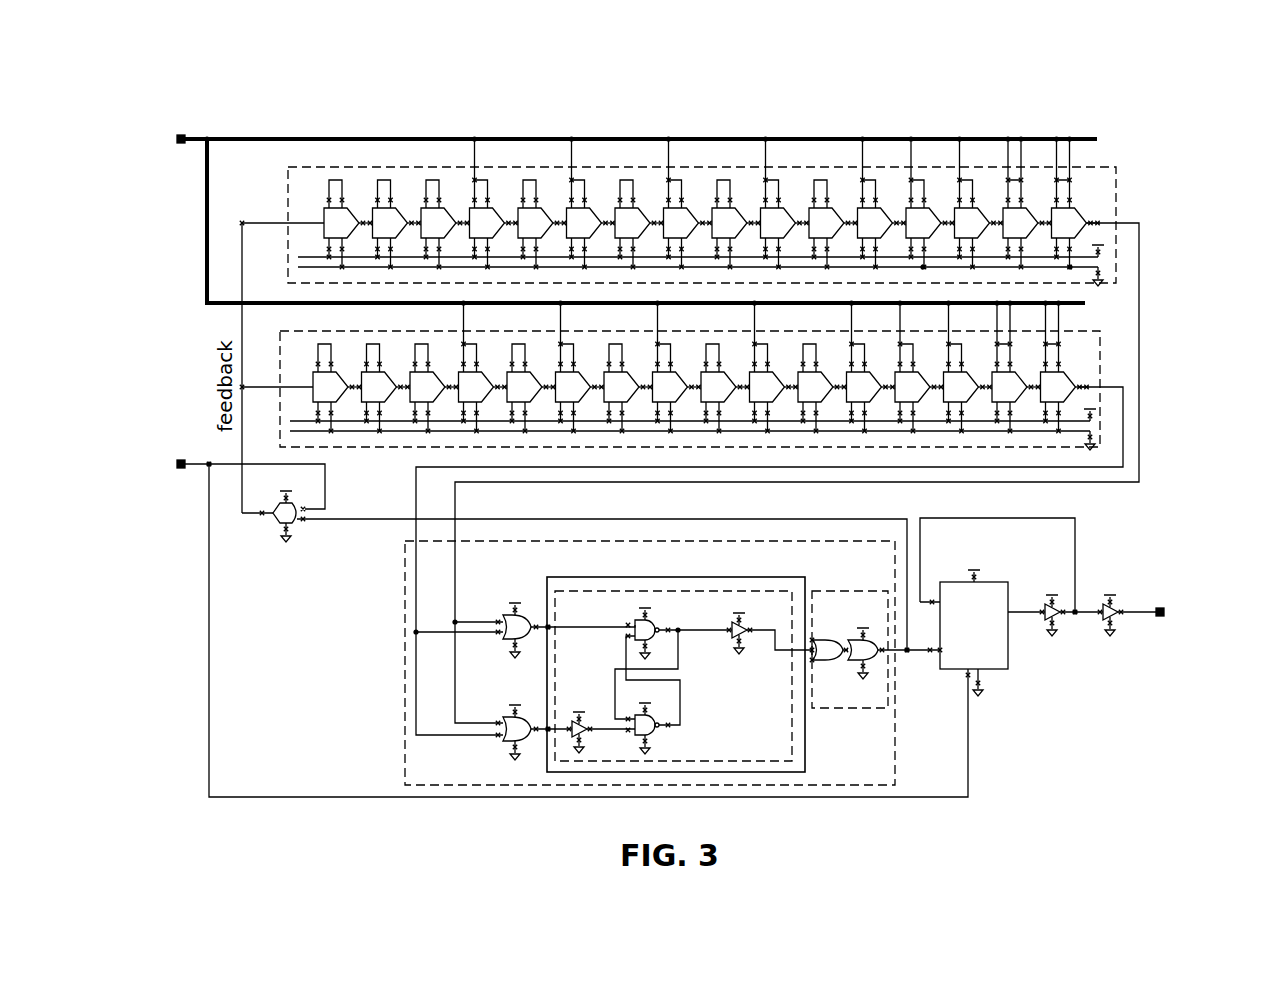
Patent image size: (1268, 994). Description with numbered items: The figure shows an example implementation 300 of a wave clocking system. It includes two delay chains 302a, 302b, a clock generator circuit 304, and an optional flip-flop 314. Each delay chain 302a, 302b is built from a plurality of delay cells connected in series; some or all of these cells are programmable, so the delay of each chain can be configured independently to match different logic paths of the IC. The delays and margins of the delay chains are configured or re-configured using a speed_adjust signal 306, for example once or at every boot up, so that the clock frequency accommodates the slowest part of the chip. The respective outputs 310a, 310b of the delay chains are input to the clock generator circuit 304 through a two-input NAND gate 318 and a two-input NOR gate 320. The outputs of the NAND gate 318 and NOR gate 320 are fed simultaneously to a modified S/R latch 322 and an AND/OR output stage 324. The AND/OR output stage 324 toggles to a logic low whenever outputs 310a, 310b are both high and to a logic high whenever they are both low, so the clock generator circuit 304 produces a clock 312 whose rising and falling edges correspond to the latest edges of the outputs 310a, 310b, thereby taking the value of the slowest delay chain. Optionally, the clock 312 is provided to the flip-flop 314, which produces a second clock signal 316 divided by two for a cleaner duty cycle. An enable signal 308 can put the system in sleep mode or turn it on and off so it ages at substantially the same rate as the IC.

The example implementation 300 is at (1254, 60).
The delay chain 302a is at (570, 165).
The delay chain 302b is at (362, 450).
The clock generator circuit 304 is at (440, 786).
The speed_adjust signal 306 is at (186, 150).
The enable signal 308 is at (207, 462).
The output 310a is at (1145, 265).
The output 310b is at (1130, 430).
The clock 312 is at (912, 652).
The flip-flop 314 is at (997, 671).
The second clock signal 316 is at (1148, 622).
The two-input NAND gate 318 is at (505, 612).
The two-input NOR gate 320 is at (500, 717).
The modified S/R latch 322 is at (780, 773).
The AND/OR output stage 324 is at (845, 710).